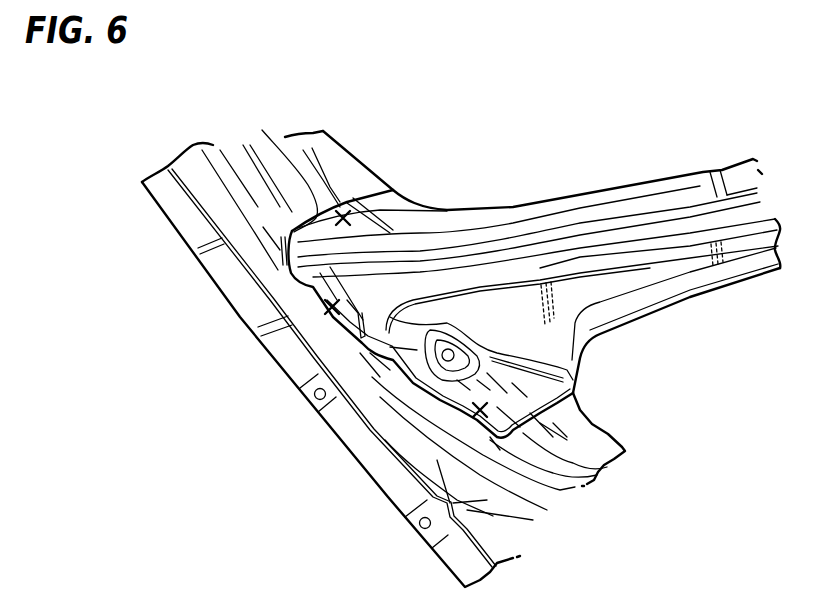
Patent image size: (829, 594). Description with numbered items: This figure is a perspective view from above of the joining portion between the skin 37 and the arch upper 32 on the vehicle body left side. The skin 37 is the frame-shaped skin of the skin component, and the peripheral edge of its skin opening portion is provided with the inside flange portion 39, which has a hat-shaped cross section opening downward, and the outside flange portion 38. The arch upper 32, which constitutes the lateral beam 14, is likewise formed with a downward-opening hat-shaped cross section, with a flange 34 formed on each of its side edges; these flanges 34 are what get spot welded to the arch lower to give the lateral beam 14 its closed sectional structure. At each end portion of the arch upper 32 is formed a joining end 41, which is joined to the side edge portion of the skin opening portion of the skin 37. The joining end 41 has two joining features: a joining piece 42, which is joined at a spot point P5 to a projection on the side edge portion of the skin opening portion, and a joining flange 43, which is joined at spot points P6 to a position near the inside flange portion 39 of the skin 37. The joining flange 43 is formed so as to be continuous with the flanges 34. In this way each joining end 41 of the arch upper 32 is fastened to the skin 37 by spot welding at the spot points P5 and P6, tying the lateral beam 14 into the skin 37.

The lateral beam 14 is at (537, 160).
The arch upper 32 is at (528, 232).
The flange 34 is at (598, 202).
The skin 37 is at (183, 238).
The outside flange portion 38 is at (215, 277).
The inside flange portion 39 is at (353, 167).
The joining end 41 is at (422, 214).
The joining piece 42 is at (352, 325).
The joining flange 43 is at (262, 131).
The spot point P5 is at (320, 312).
The spot points P6 is at (343, 214).